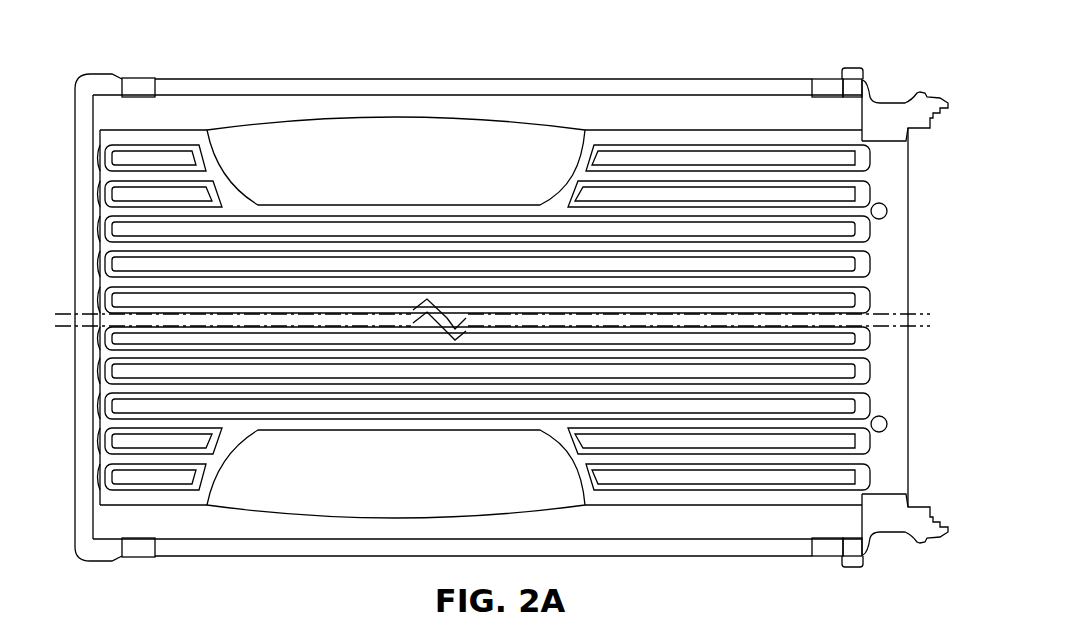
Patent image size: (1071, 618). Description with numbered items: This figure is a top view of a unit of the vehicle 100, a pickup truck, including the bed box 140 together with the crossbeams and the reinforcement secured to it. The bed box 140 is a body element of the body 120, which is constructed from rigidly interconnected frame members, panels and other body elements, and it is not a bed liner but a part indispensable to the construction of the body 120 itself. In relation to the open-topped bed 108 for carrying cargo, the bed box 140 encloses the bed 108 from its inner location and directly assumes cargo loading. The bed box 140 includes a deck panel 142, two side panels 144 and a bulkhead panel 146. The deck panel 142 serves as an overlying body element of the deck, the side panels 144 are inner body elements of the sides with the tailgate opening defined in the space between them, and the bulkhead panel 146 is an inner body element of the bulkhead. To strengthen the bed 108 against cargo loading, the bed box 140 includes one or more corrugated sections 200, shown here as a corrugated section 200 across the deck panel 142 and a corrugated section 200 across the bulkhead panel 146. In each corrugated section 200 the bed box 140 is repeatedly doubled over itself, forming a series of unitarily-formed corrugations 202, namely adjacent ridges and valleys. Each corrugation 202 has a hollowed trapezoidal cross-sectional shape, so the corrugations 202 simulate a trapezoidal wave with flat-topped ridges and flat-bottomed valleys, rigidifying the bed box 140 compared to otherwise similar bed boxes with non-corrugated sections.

The vehicle 100 is at (98, 74).
The bed 108 is at (182, 79).
The body 120 is at (258, 79).
The bed box 140 is at (340, 79).
The side panels 144 is at (407, 79).
The deck panel 142 is at (621, 130).
The bulkhead panel 146 is at (76, 375).
The corrugated section 200 is at (641, 145).
The corrugations 202 is at (664, 160).